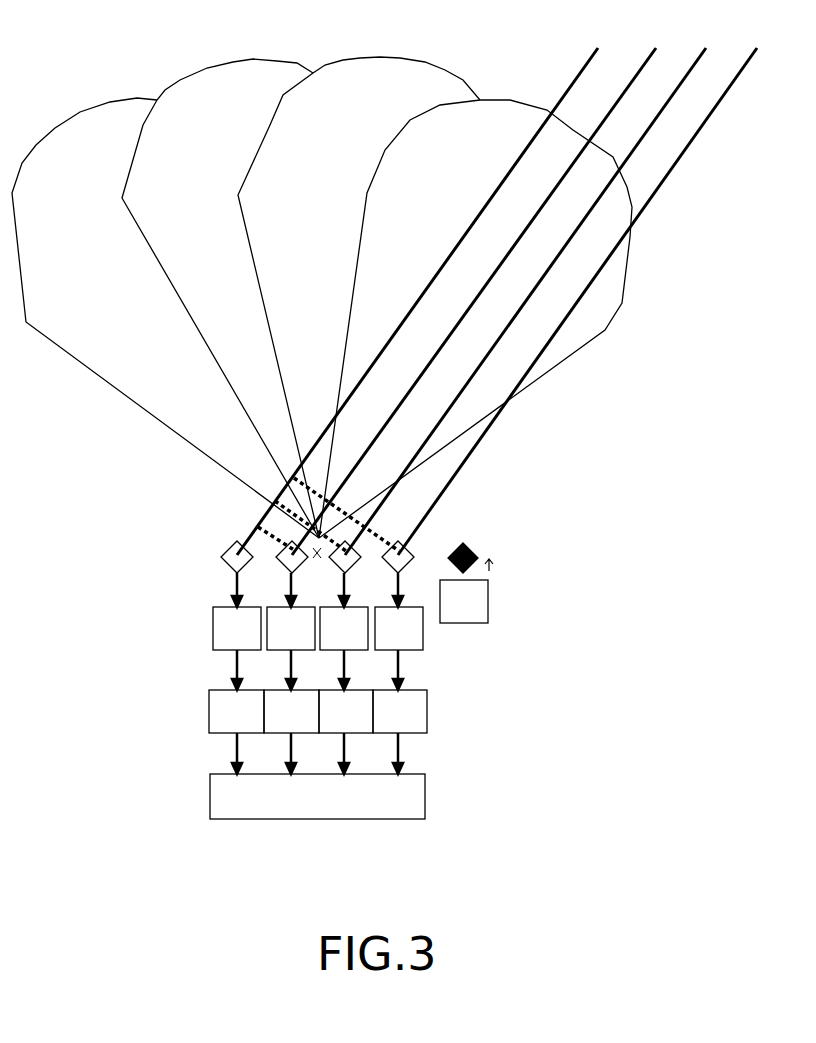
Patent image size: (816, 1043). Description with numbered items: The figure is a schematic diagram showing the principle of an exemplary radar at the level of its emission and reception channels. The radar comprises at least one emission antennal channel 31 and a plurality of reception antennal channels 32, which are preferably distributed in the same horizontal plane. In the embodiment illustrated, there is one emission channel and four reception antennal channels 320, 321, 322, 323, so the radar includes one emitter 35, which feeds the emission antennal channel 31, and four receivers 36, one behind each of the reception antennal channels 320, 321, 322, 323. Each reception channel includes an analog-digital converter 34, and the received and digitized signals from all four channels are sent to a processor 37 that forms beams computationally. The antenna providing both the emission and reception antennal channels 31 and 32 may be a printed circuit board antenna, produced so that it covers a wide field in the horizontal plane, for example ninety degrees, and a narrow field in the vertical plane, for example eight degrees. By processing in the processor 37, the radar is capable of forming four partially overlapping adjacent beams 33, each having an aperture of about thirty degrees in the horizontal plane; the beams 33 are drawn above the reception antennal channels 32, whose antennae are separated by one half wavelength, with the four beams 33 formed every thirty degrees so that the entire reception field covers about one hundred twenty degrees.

The emission antennal channel 31 is at (477, 547).
The reception antennal channels 32 is at (235, 579).
The antennal channel 320 is at (228, 560).
The antennal channel 321 is at (300, 547).
The antennal channel 322 is at (335, 545).
The antennal channel 323 is at (407, 547).
The reception beams (antenna lobes) 33 is at (78, 147).
The analog-digital converter 34 is at (430, 740).
The emitter 35 is at (488, 607).
The receivers 36 is at (203, 657).
The processor 37 is at (290, 819).